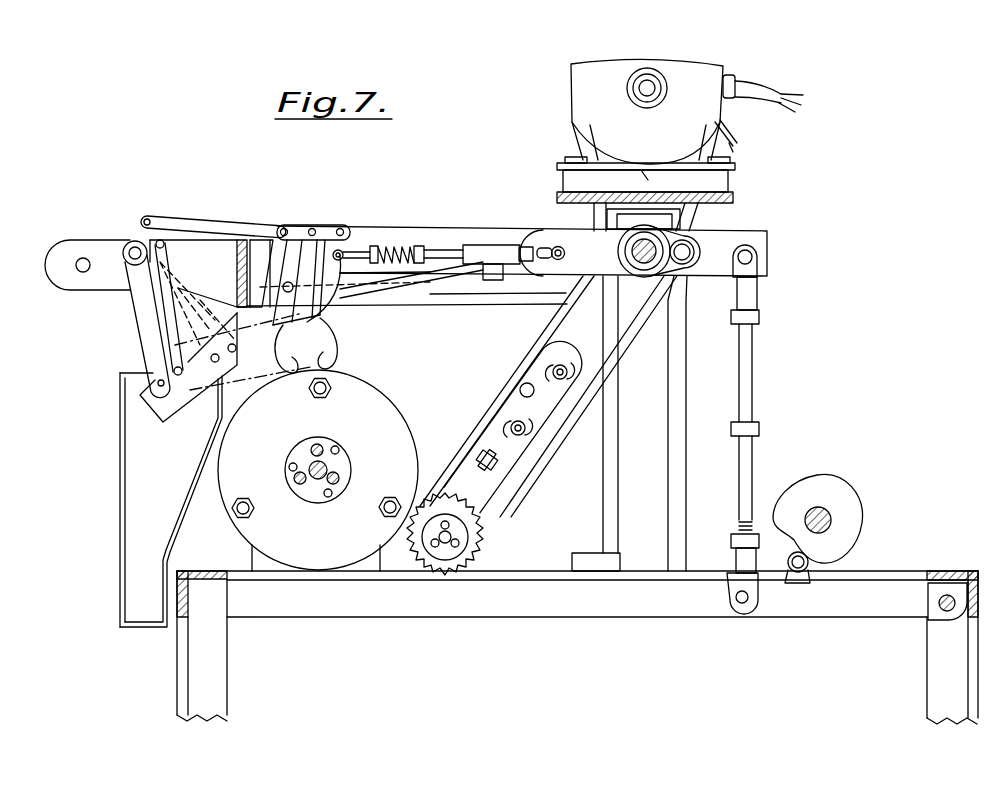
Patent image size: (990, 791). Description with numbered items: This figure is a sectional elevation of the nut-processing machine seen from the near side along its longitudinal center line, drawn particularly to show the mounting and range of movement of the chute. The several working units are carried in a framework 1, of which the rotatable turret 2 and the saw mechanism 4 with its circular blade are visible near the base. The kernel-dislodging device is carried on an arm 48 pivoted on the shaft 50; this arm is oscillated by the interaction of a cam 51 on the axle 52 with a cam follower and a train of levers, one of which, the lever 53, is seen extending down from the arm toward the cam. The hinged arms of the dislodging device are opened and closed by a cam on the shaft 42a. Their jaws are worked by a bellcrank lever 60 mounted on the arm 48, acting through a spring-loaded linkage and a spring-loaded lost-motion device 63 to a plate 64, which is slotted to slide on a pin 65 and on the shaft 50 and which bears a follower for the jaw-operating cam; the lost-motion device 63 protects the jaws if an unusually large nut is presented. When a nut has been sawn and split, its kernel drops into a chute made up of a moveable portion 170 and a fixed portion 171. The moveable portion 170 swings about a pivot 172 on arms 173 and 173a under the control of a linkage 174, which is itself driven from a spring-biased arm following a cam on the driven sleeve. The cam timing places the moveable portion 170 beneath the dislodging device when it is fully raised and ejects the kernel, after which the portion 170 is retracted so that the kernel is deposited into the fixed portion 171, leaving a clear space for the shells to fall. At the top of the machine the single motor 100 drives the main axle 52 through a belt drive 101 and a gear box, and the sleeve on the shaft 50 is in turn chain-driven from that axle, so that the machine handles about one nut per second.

The motor 100 is at (590, 96).
The belt drive 101 is at (734, 139).
The arm 48 is at (430, 233).
The bellcrank lever 60 is at (327, 227).
The spring-loaded lost-motion device 63 is at (487, 250).
The plate 64 is at (552, 231).
The pin 65 is at (557, 261).
The shaft 50 is at (631, 252).
The connecting rod 53 is at (748, 377).
The cam 51 is at (830, 487).
The axle 52 is at (830, 512).
The shaft 42a is at (417, 284).
The pivot 172 is at (131, 247).
The linkage 174 is at (209, 223).
The arm 173 is at (150, 320).
The arm 173a is at (176, 345).
The moveable portion of the chute 170 is at (163, 408).
The fixed portion of the chute 171 is at (120, 491).
The rotatable turret 2 is at (318, 470).
The saw mechanism 4 is at (475, 547).
The framework 1 is at (484, 592).